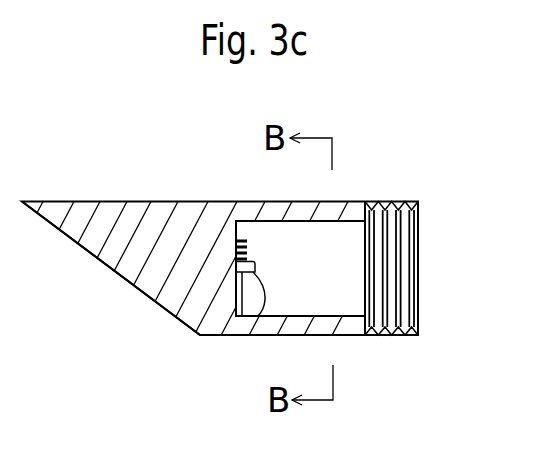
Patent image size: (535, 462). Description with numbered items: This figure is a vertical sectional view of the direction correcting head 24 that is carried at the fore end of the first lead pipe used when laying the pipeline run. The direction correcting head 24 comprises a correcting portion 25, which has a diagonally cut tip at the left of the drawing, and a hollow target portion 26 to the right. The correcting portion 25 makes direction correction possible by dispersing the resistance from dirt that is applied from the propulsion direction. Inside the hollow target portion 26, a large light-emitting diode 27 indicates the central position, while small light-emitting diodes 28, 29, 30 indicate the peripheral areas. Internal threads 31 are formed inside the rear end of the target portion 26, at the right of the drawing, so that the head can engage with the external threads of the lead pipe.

The direction correcting head 24 is at (205, 175).
The correcting portion 25 is at (121, 276).
The target portion 26 is at (393, 337).
The large light-emitting diode 27 is at (235, 335).
The small light-emitting diode 28 is at (260, 261).
The small light-emitting diode 29 is at (247, 253).
The small light-emitting diode 30 is at (247, 242).
The internal threads 31 is at (414, 226).